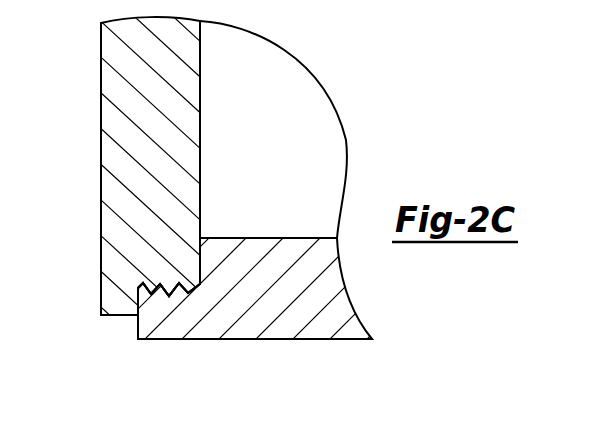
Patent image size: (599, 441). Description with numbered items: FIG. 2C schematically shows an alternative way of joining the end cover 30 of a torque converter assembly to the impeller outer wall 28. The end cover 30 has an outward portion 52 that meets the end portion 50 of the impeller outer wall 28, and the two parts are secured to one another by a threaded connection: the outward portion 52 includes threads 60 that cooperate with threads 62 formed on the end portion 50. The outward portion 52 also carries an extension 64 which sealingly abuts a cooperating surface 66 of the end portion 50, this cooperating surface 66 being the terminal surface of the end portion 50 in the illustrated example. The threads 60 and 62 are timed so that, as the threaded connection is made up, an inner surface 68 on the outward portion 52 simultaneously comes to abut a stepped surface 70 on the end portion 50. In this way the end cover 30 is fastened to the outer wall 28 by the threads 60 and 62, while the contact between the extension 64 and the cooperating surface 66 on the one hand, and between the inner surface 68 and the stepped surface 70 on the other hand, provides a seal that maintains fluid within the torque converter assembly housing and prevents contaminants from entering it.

The impeller outer wall 28 is at (310, 238).
The end cover 30 is at (201, 87).
The end portion 50 is at (280, 339).
The outward portion 52 is at (101, 186).
The threads 60 is at (199, 292).
The threads 62 is at (172, 296).
The extension 64 is at (139, 292).
The cooperating surface 66 is at (138, 338).
The inner surface 68 is at (201, 258).
The stepped surface 70 is at (200, 259).